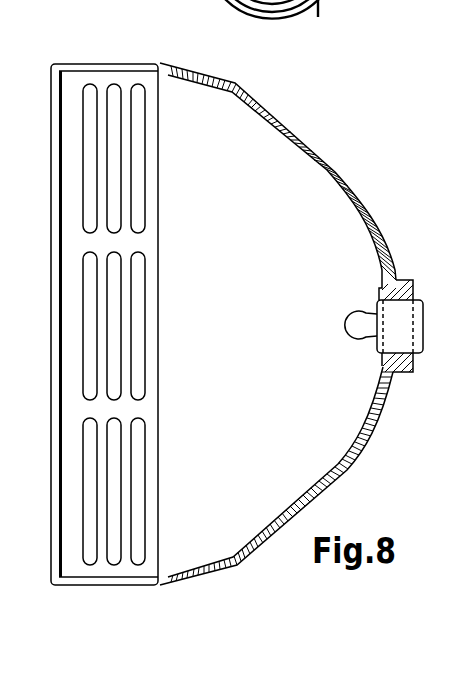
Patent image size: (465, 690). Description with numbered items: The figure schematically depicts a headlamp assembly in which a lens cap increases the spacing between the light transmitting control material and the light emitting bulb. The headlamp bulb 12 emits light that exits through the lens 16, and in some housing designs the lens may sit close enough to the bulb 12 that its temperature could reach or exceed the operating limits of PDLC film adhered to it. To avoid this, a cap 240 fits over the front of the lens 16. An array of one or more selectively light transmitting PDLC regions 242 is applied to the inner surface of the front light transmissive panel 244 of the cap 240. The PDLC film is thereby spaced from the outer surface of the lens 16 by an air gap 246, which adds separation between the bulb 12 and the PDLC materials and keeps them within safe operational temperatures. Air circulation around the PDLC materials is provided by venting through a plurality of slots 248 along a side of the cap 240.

The headlamp bulb 12 is at (362, 323).
The lens 16 is at (168, 456).
The cap 240 is at (115, 577).
The PDLC regions 242 is at (63, 105).
The front light transmissive panel 244 is at (48, 533).
The air gap 246 is at (127, 242).
The slots 248 is at (143, 174).